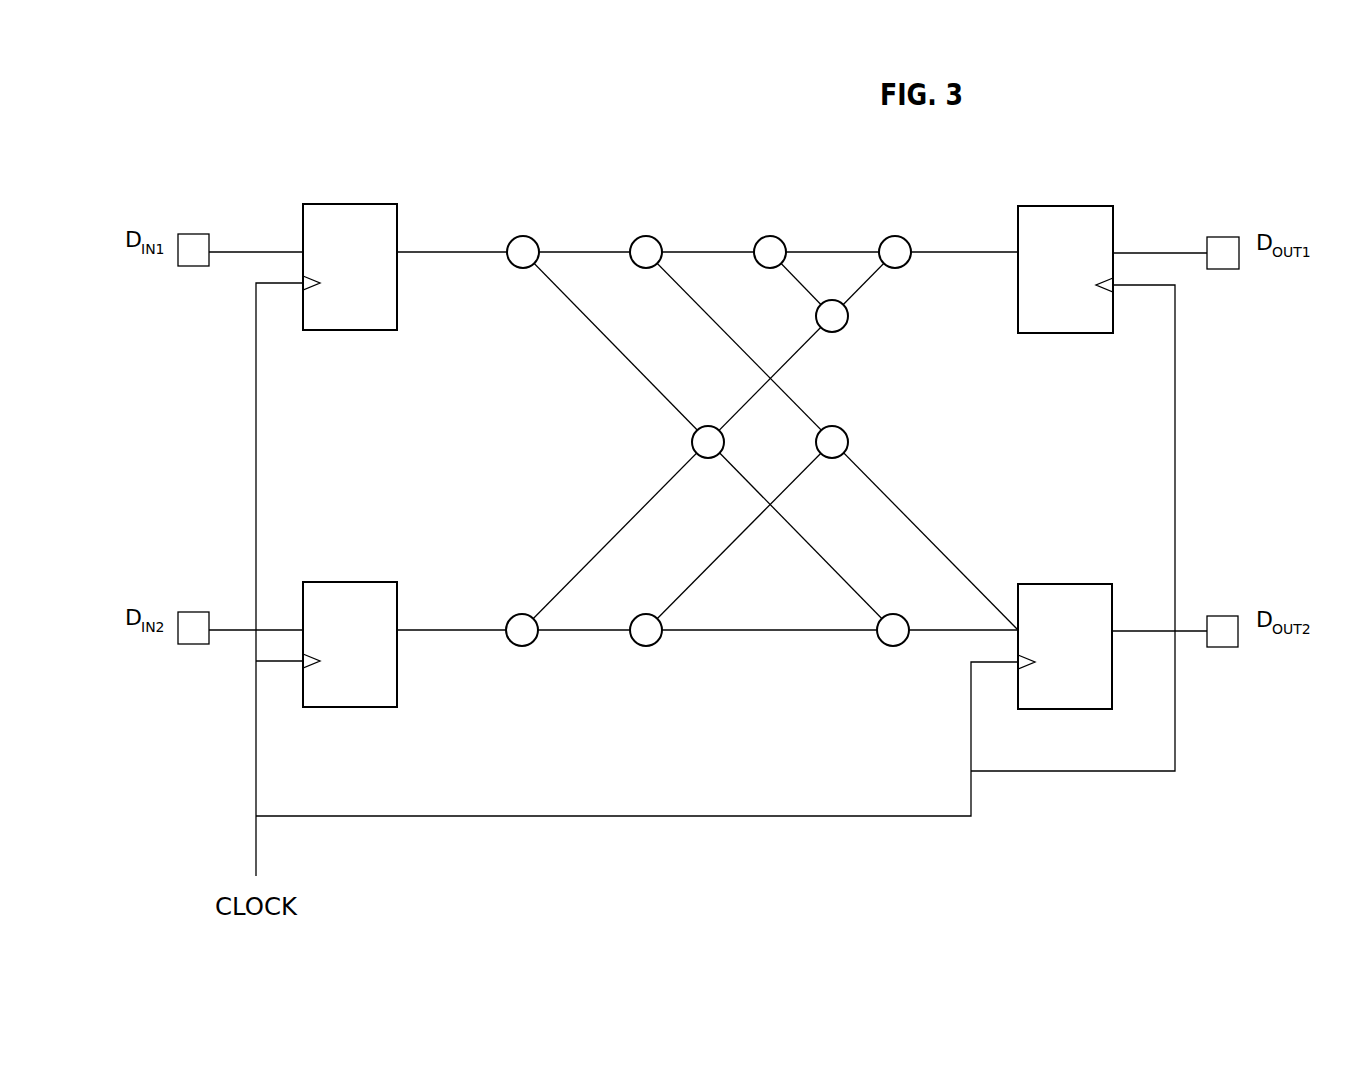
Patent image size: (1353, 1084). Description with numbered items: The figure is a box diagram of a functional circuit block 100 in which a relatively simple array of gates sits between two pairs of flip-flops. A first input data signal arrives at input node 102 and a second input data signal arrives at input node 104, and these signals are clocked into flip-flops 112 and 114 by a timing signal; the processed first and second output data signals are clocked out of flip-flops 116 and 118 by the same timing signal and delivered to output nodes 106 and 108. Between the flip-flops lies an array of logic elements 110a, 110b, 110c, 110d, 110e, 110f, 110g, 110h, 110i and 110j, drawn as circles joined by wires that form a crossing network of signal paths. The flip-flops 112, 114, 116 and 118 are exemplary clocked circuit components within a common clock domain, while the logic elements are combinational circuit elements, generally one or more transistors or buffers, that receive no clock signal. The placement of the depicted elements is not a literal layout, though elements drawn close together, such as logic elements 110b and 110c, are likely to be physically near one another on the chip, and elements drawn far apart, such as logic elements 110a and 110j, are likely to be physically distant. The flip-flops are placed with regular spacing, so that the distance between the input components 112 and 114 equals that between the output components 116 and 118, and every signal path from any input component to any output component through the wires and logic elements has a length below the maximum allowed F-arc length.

The functional circuit block 100 is at (460, 118).
The input node 102 is at (190, 234).
The input node 104 is at (190, 612).
The output node 106 is at (1230, 237).
The output node 108 is at (1228, 616).
The logic element 110a is at (515, 237).
The logic element 110b is at (640, 237).
The logic element 110c is at (763, 237).
The logic element 110d is at (888, 237).
The logic element 110e is at (843, 328).
The logic element 110f is at (692, 436).
The logic element 110g is at (848, 435).
The logic element 110h is at (515, 615).
The logic element 110i is at (640, 647).
The logic element 110j is at (885, 648).
The flip-flop 112 is at (332, 204).
The flip-flop 114 is at (332, 582).
The flip-flop 116 is at (1077, 206).
The flip-flop 118 is at (1078, 584).